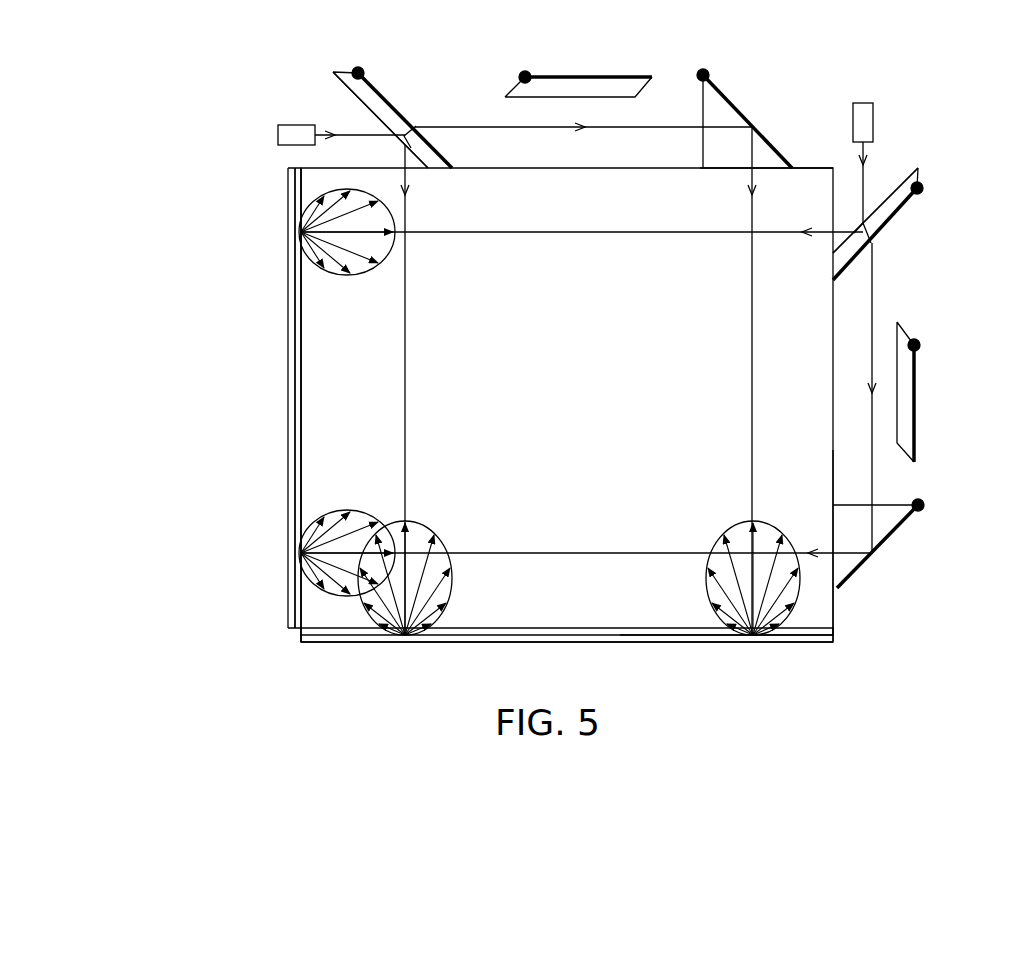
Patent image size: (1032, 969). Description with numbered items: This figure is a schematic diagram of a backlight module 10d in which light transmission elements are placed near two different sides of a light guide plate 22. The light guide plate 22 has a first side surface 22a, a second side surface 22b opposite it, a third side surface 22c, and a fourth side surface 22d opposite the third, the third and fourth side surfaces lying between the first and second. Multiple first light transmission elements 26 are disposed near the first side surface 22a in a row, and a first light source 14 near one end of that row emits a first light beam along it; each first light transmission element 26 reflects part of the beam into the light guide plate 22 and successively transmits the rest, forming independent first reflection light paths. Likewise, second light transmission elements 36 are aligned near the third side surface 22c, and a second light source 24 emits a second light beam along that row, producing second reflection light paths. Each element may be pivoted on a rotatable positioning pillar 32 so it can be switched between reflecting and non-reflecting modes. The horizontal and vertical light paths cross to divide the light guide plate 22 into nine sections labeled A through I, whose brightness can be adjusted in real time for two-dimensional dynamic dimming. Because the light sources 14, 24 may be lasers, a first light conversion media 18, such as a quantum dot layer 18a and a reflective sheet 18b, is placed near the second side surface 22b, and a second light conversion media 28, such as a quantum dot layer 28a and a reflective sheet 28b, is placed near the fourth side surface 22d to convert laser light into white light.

The backlight module 10d is at (148, 109).
The first light source 14 is at (302, 125).
The second light source 24 is at (873, 122).
The first light conversion media 18 is at (620, 620).
The quantum dot layer 18a is at (833, 632).
The reflective sheet 18b is at (833, 642).
The light guide plate 22 is at (315, 322).
The first side surface 22a is at (805, 168).
The second side surface 22b is at (667, 633).
The third side surface 22c is at (837, 602).
The fourth side surface 22d is at (302, 348).
The first light transmission element 26 is at (383, 110).
The second light conversion media 28 is at (231, 432).
The quantum dot layer 28a is at (295, 630).
The reflective sheet 28b is at (288, 604).
The rotatable positioning pillar 32 is at (365, 70).
The second light transmission element 36 is at (883, 216).